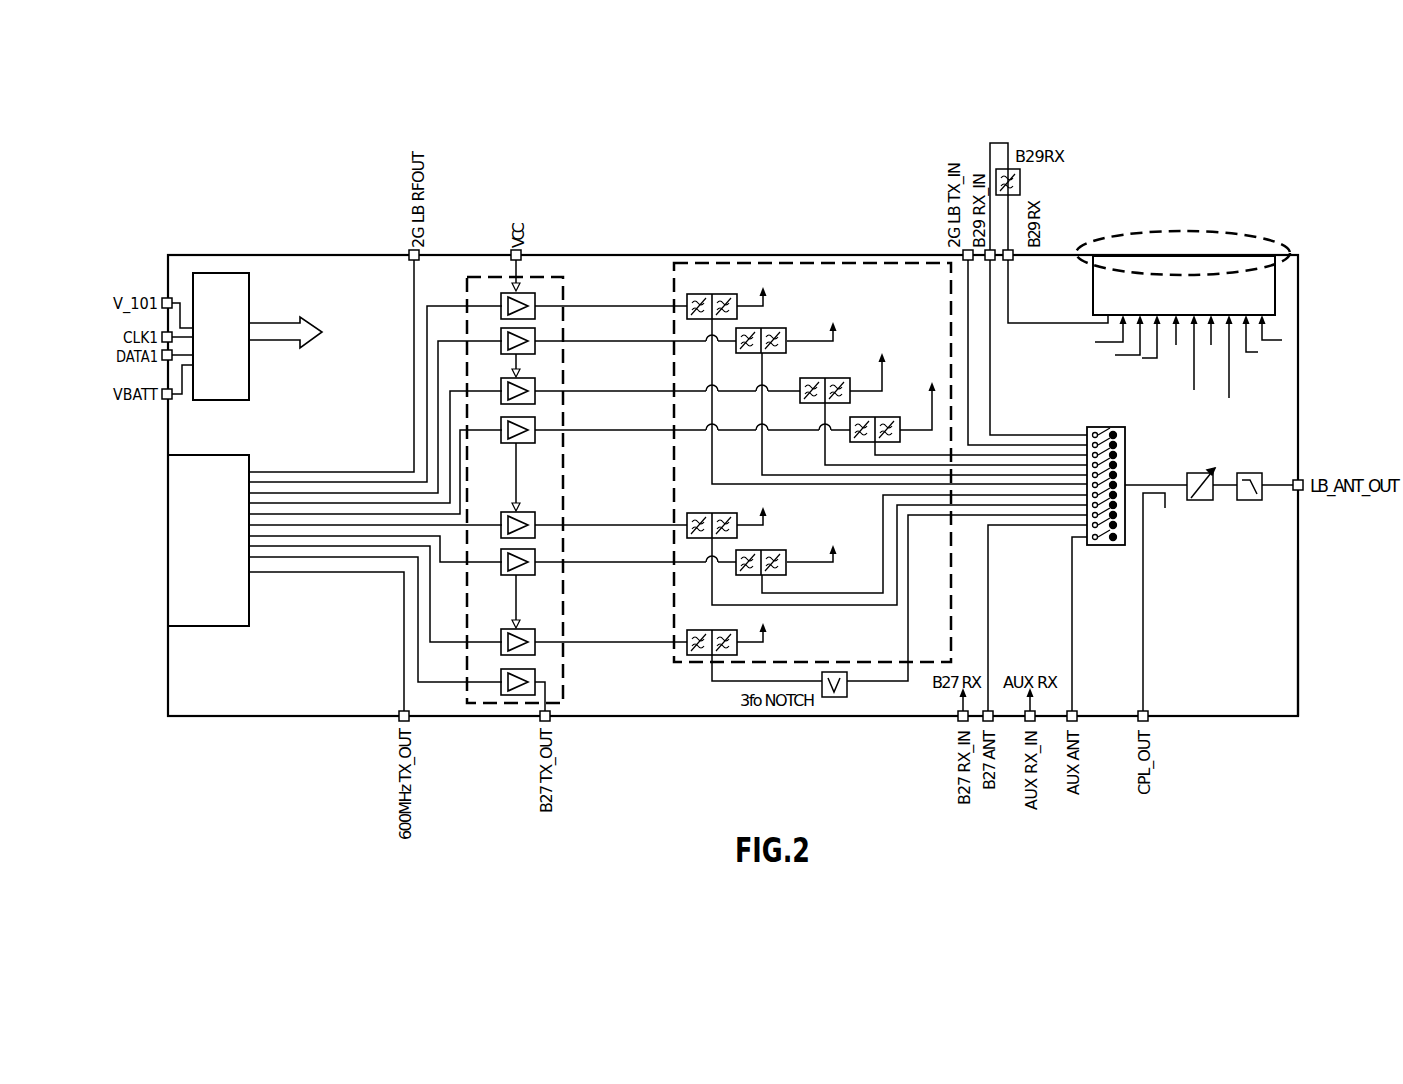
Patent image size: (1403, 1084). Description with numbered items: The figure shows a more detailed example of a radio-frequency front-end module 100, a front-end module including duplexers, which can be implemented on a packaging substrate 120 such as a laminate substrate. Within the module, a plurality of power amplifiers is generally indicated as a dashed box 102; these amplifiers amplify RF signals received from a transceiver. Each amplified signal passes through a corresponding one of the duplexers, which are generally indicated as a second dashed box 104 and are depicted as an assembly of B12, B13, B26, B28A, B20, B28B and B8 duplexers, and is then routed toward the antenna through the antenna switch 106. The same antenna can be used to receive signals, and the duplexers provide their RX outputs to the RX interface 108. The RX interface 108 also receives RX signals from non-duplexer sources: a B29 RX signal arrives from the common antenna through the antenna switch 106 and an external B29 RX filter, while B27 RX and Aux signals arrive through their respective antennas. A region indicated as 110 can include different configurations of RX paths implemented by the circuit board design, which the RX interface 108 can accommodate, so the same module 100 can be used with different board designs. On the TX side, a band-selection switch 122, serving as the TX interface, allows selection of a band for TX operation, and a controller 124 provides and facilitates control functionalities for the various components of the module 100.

The RF module 100 is at (1298, 415).
The power amplifiers 102 is at (555, 277).
The duplexers 104 is at (816, 263).
The antenna switch 106 is at (1121, 545).
The RX interface 108 is at (1275, 292).
The region of RX paths 110 is at (1192, 232).
The packaging substrate 120 is at (1268, 611).
The band-selection switch 122 is at (207, 627).
The controller 124 is at (249, 380).